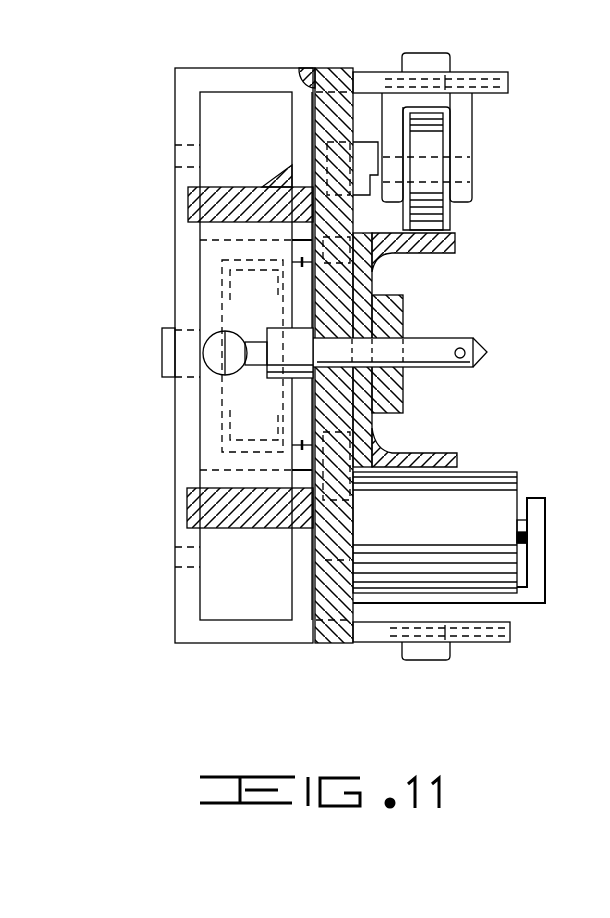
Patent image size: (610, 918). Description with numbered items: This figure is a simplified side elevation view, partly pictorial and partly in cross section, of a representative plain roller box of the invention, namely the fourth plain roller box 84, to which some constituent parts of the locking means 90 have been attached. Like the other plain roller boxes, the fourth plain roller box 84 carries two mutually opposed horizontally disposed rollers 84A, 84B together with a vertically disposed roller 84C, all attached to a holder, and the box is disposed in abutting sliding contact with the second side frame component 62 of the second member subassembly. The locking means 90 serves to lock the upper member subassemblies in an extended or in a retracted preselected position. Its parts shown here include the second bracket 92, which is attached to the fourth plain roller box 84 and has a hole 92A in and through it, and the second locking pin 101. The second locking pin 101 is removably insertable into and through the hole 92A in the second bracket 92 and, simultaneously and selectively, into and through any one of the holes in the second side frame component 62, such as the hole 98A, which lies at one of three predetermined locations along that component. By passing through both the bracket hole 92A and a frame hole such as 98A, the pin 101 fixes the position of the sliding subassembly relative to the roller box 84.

The fourth plain roller box 84 is at (242, 70).
The second bracket 92 is at (333, 70).
The horizontally disposed roller 84A is at (443, 222).
The vertically disposed roller 84C is at (245, 282).
The hole 98A is at (333, 337).
The hole 92A is at (315, 409).
The means for locking 90 is at (443, 325).
The second locking pin 101 is at (430, 370).
The second side frame component 62 is at (433, 452).
The horizontally disposed roller 84B is at (517, 485).